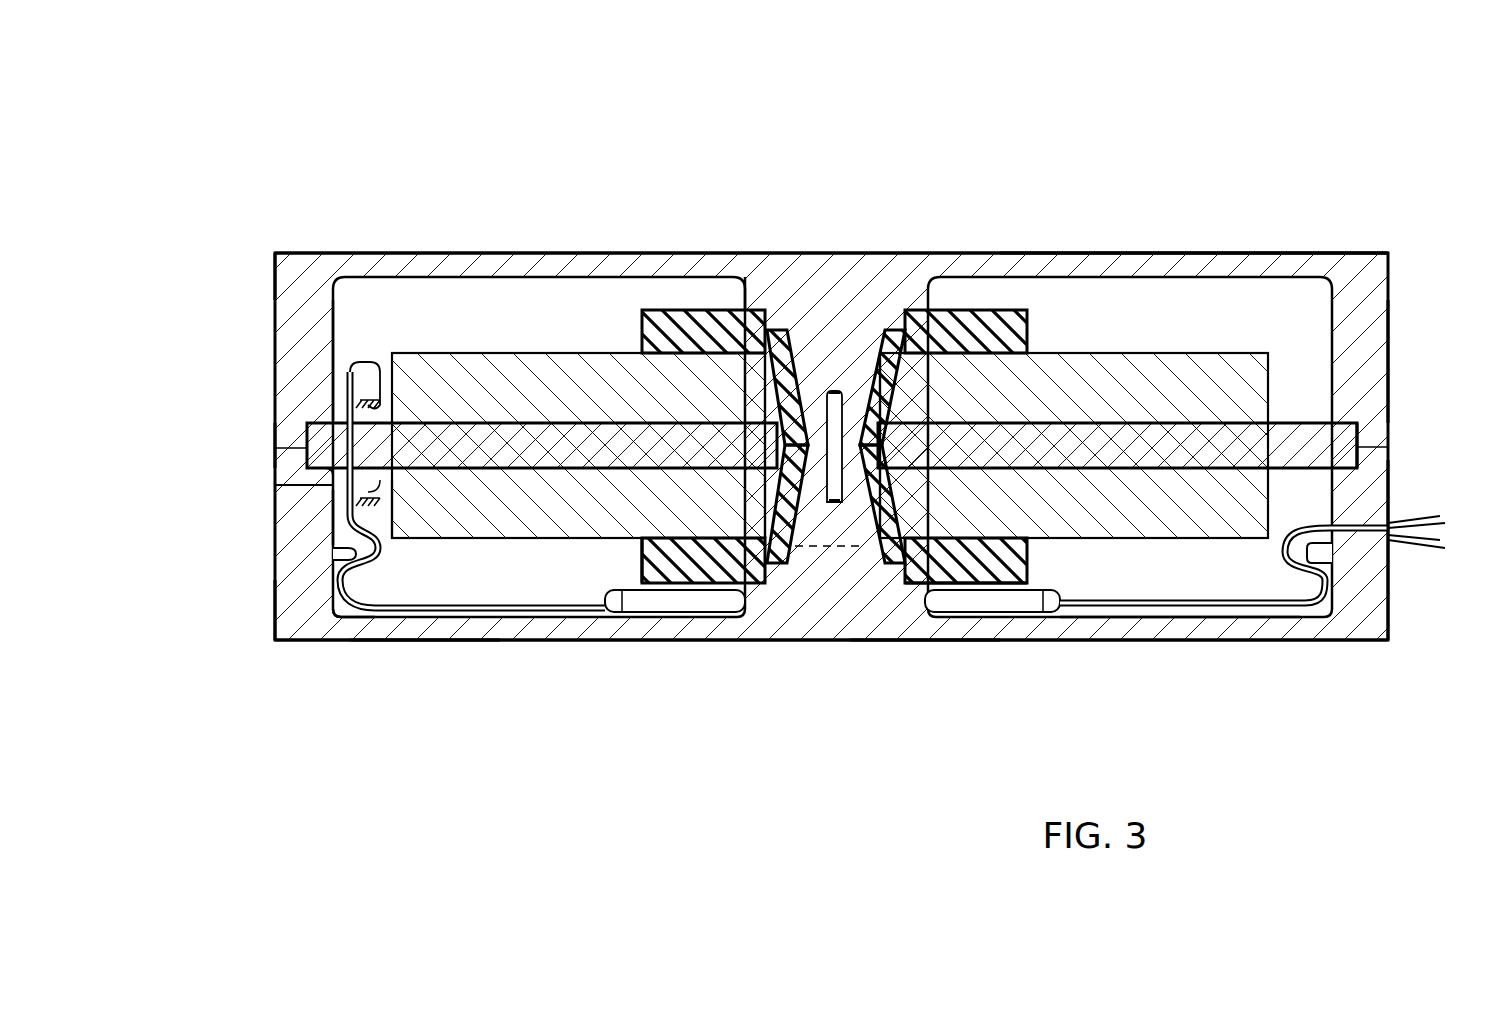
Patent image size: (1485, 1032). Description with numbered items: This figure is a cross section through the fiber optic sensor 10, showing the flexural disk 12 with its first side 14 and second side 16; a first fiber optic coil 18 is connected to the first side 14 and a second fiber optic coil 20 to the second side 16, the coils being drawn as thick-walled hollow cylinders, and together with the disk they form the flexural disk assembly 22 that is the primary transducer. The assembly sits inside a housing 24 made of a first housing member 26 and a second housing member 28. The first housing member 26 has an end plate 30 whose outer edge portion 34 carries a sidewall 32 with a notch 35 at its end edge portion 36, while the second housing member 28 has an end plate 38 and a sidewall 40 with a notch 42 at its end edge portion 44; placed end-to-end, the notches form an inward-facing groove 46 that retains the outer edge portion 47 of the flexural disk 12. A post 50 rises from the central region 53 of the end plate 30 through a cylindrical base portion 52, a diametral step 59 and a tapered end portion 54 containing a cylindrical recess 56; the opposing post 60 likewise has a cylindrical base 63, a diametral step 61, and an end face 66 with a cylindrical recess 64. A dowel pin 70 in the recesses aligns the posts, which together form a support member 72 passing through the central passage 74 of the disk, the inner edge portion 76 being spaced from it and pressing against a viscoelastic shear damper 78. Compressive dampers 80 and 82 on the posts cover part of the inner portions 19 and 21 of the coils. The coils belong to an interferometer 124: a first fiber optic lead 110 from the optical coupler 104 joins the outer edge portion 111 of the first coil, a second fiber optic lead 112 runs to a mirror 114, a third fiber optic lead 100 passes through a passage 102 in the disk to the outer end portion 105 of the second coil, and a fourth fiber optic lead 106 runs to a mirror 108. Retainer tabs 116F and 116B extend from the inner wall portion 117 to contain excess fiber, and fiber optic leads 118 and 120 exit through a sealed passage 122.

The fiber optic sensor 10 is at (914, 810).
The flexural disk 12 is at (1208, 470).
The first side 14 is at (1163, 470).
The second side 16 is at (1165, 423).
The first fiber optic coil 18 is at (545, 540).
The inner portion of the first fiber optic coil 19 is at (710, 590).
The second fiber optic coil 20 is at (515, 353).
The inner portion of the second fiber optic coil 21 is at (663, 310).
The flexural disk assembly 22 is at (1204, 150).
The housing 24 is at (228, 608).
The first housing member 26 is at (275, 640).
The second housing member 28 is at (275, 272).
The end plate 30 is at (1153, 640).
The sidewall 32 is at (1388, 495).
The outer edge portion 34 is at (1280, 640).
The notch 35 is at (1360, 423).
The end edge portion 36 is at (1408, 443).
The end plate 38 is at (325, 253).
The sidewall 40 is at (333, 318).
The notch 42 is at (300, 430).
The end edge portion 44 is at (246, 435).
The groove 46 is at (333, 480).
The outer edge portion 47 is at (1352, 423).
The post 50 is at (935, 585).
The base portion 52 is at (785, 580).
The central region 53 is at (828, 640).
The end portion 54 is at (983, 583).
The cylindrical recess 56 is at (848, 505).
The diametral step 59 is at (670, 583).
The post 60 is at (930, 290).
The diametral step 61 is at (868, 345).
The cylindrical base 63 is at (800, 320).
The cylindrical recess 64 is at (805, 412).
The end face 66 is at (850, 395).
The dowel pin 70 is at (780, 395).
The support member 72 is at (728, 488).
The central passage 74 is at (967, 483).
The inner edge portion 76 is at (790, 420).
The shear damper 78 is at (823, 340).
The compressive damper 80 is at (940, 403).
The compressive damper 82 is at (1030, 330).
The third fiber optic lead 100 is at (333, 512).
The passage 102 is at (333, 400).
The optical coupler 104 is at (620, 612).
The outer end portion 105 is at (405, 353).
The fourth fiber optic lead 106 is at (380, 412).
The mirror 108 is at (370, 400).
The first fiber optic lead 110 is at (380, 552).
The outer edge portion 111 is at (425, 545).
The second fiber optic lead 112 is at (505, 540).
The mirror 114 is at (395, 600).
The retainer tab 116F is at (340, 590).
The retainer tab 116B is at (1333, 547).
The inner wall portion 117 is at (333, 552).
The fiber optic lead 118 is at (1187, 607).
The fiber optic lead 120 is at (1243, 595).
The passage 122 is at (1367, 540).
The interferometer 124 is at (397, 789).